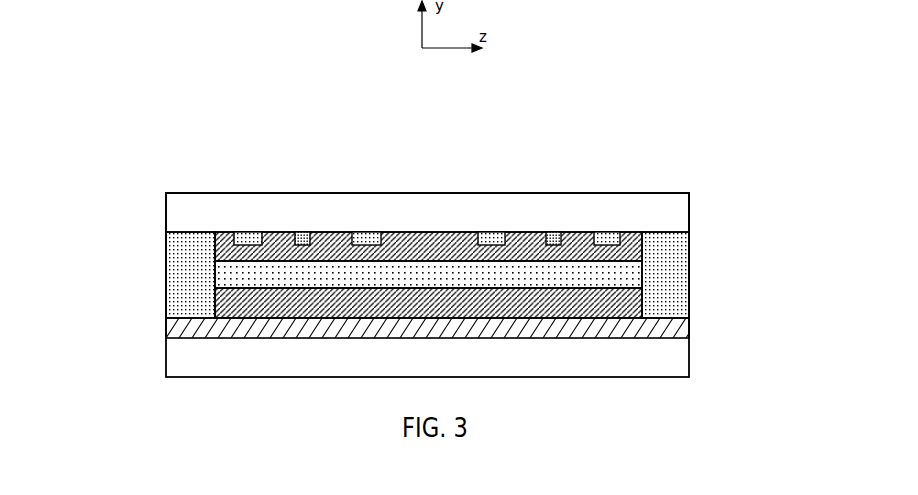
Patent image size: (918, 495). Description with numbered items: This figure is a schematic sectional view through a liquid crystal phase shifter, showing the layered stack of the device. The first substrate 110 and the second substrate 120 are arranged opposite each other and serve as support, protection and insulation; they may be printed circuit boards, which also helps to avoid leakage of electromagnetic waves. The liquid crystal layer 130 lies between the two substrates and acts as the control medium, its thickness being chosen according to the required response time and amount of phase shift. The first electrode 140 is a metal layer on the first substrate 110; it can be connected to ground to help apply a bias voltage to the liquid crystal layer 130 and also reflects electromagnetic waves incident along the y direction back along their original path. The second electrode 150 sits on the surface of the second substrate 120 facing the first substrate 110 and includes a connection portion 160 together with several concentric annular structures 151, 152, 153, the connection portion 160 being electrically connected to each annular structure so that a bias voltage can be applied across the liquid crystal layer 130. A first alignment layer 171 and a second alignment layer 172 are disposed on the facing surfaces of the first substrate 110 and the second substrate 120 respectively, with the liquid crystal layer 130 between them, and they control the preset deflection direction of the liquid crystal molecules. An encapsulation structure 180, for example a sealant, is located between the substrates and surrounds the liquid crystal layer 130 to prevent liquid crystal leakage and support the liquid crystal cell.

The first substrate 110 is at (660, 357).
The second substrate 120 is at (660, 212).
The liquid crystal layer 130 is at (613, 275).
The first electrode 140 is at (665, 326).
The second electrode 150 is at (377, 108).
The first annular structure 151 is at (253, 232).
The second annular structure 152 is at (305, 232).
The third annular structure 153 is at (368, 232).
The connection portion 160 is at (428, 240).
The first alignment layer 171 is at (215, 305).
The second alignment layer 172 is at (215, 250).
The encapsulation structure 180 is at (660, 251).